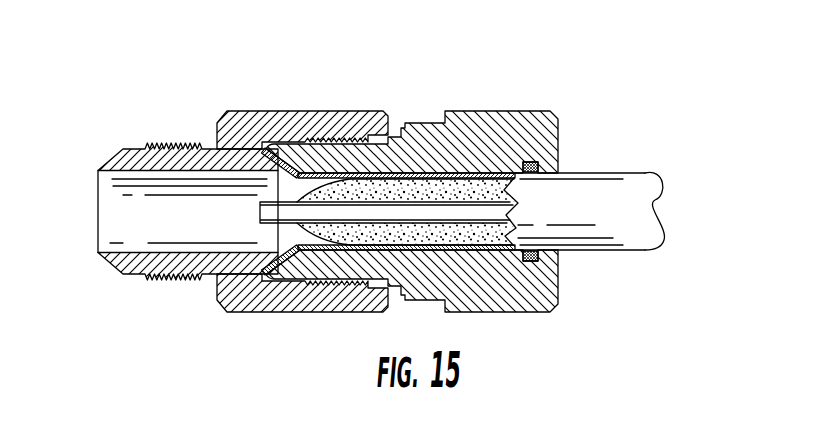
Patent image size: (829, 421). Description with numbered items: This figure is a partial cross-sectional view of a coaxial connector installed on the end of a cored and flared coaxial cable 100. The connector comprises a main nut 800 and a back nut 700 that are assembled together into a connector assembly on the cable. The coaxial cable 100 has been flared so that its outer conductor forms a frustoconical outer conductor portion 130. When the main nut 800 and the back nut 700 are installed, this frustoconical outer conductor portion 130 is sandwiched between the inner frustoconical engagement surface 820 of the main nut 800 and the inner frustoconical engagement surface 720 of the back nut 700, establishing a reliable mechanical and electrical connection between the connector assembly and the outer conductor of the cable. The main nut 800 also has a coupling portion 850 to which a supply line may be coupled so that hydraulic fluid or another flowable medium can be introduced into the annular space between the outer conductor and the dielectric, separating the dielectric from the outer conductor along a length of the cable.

The coupling portion 850 is at (132, 149).
The main nut 800 is at (277, 70).
The back nut 700 is at (490, 98).
The inner frustoconical engagement surface 820 is at (262, 266).
The inner frustoconical engagement surface 720 is at (276, 272).
The coaxial cable 100 is at (632, 130).
The frustoconical outer conductor portion 130 is at (289, 250).